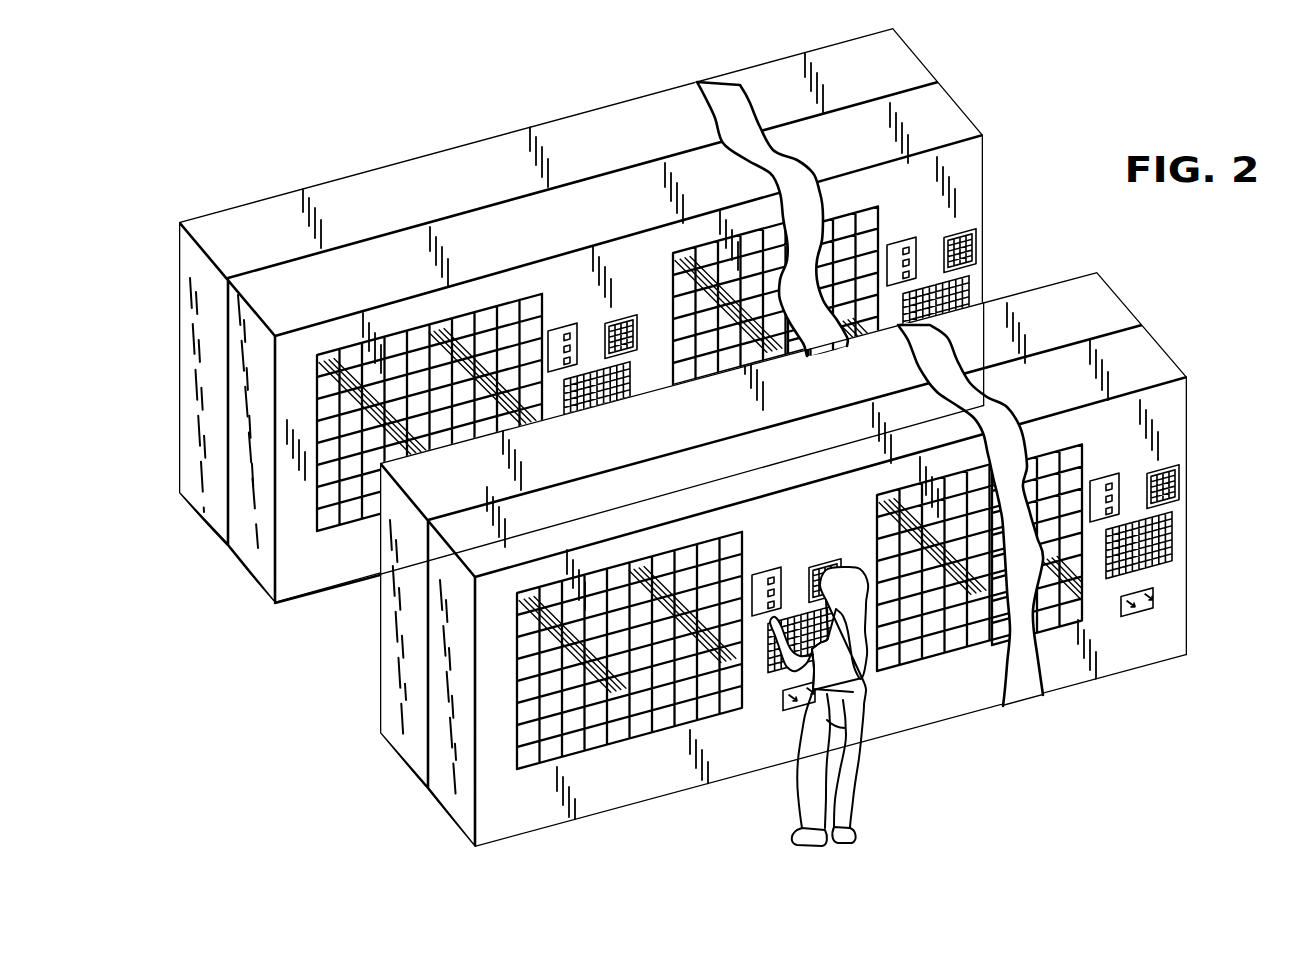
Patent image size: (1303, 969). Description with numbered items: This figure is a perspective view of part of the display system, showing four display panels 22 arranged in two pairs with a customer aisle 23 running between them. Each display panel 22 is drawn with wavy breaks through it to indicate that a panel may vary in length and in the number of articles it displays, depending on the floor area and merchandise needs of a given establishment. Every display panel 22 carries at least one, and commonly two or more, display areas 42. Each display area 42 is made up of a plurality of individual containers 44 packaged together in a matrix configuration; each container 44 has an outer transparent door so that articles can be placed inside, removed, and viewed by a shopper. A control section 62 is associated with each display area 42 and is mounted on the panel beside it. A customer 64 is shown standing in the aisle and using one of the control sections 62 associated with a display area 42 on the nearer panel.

The display panel 22 is at (195, 541).
The customer aisle 23 is at (300, 665).
The display area 42 is at (312, 523).
The container 44 is at (347, 522).
The control section 62 is at (596, 313).
The customer 64 is at (850, 806).